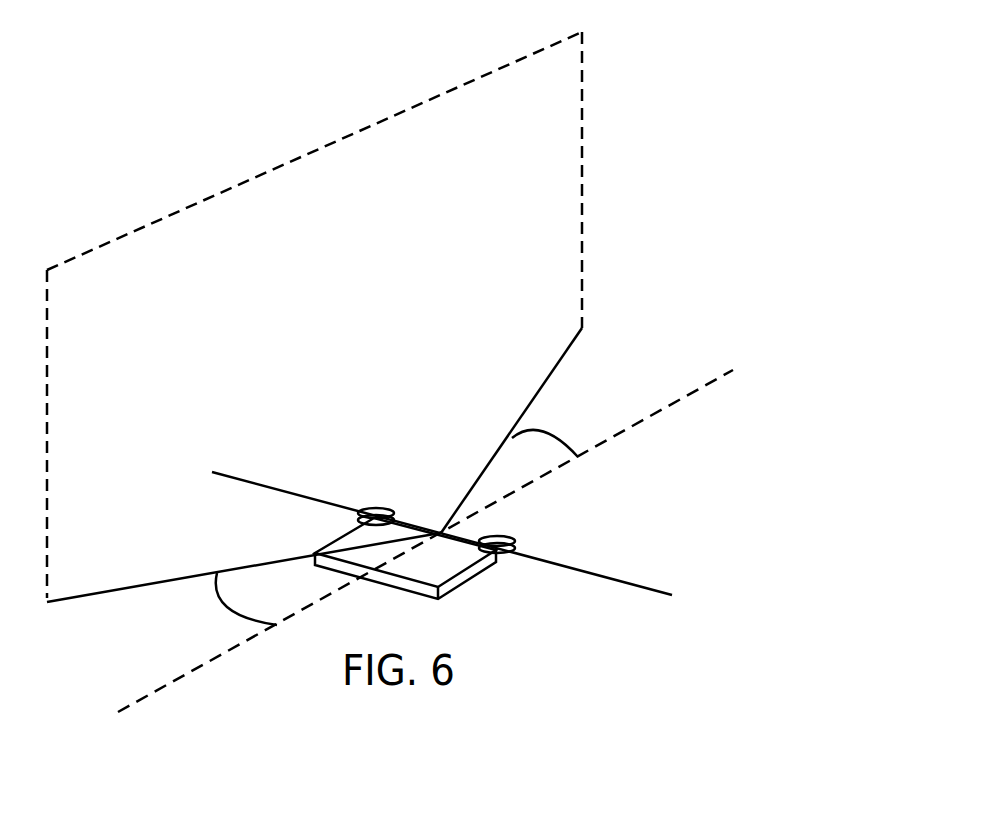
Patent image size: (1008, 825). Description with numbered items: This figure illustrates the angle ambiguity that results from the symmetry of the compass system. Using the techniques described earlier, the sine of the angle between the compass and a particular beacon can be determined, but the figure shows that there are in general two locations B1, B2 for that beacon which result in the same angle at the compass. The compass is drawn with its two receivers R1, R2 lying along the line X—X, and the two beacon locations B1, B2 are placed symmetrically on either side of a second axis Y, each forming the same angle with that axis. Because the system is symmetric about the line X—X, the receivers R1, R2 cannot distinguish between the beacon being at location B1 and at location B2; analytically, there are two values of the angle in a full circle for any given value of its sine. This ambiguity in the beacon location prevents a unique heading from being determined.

The first ultrasonic receiver R1 is at (360, 497).
The second ultrasonic receiver R2 is at (526, 541).
The first beacon location B1 is at (534, 273).
The second beacon location B2 is at (308, 317).
The line X— X is at (448, 514).
The Y axis Y is at (425, 537).